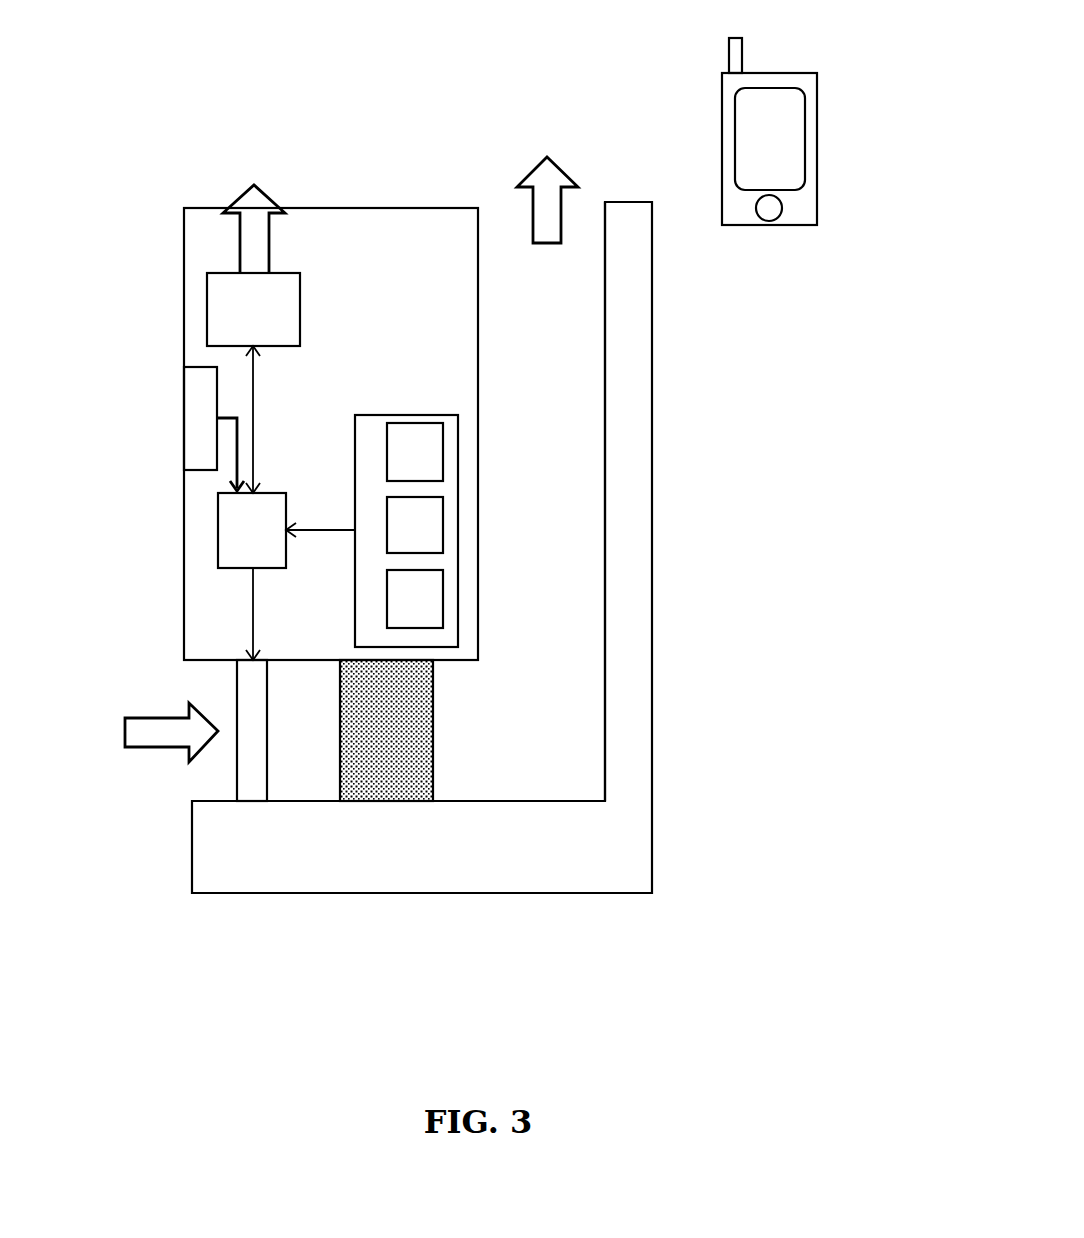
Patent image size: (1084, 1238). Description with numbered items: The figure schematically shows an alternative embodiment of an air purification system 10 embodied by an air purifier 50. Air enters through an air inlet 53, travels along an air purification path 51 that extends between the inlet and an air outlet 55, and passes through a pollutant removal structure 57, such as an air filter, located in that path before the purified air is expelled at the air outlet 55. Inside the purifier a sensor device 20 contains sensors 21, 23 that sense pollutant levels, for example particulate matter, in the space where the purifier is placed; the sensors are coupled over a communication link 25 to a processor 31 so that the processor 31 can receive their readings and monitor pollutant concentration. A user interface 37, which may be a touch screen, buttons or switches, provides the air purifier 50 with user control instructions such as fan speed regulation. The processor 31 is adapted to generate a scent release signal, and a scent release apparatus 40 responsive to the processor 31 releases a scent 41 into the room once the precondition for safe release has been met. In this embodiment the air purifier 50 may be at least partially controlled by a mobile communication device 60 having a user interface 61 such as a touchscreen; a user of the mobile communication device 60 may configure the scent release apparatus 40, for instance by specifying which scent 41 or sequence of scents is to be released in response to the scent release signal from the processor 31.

The air purification system 10 is at (402, 1009).
The sensor device 20 is at (403, 410).
The sensor 21 is at (430, 459).
The sensor 23 is at (435, 527).
The communication link 25 is at (435, 611).
The processor 31 is at (235, 537).
The user interface 37 is at (193, 414).
The scent release apparatus 40 is at (222, 309).
The scent 41 is at (247, 232).
The air purifier 50 is at (253, 790).
The air purification path 51 is at (545, 772).
The air inlet 53 is at (195, 764).
The air outlet 55 is at (498, 207).
The pollutant removal structure 57 is at (402, 743).
The mobile communication device 60 is at (817, 138).
The user interface 61 is at (745, 148).